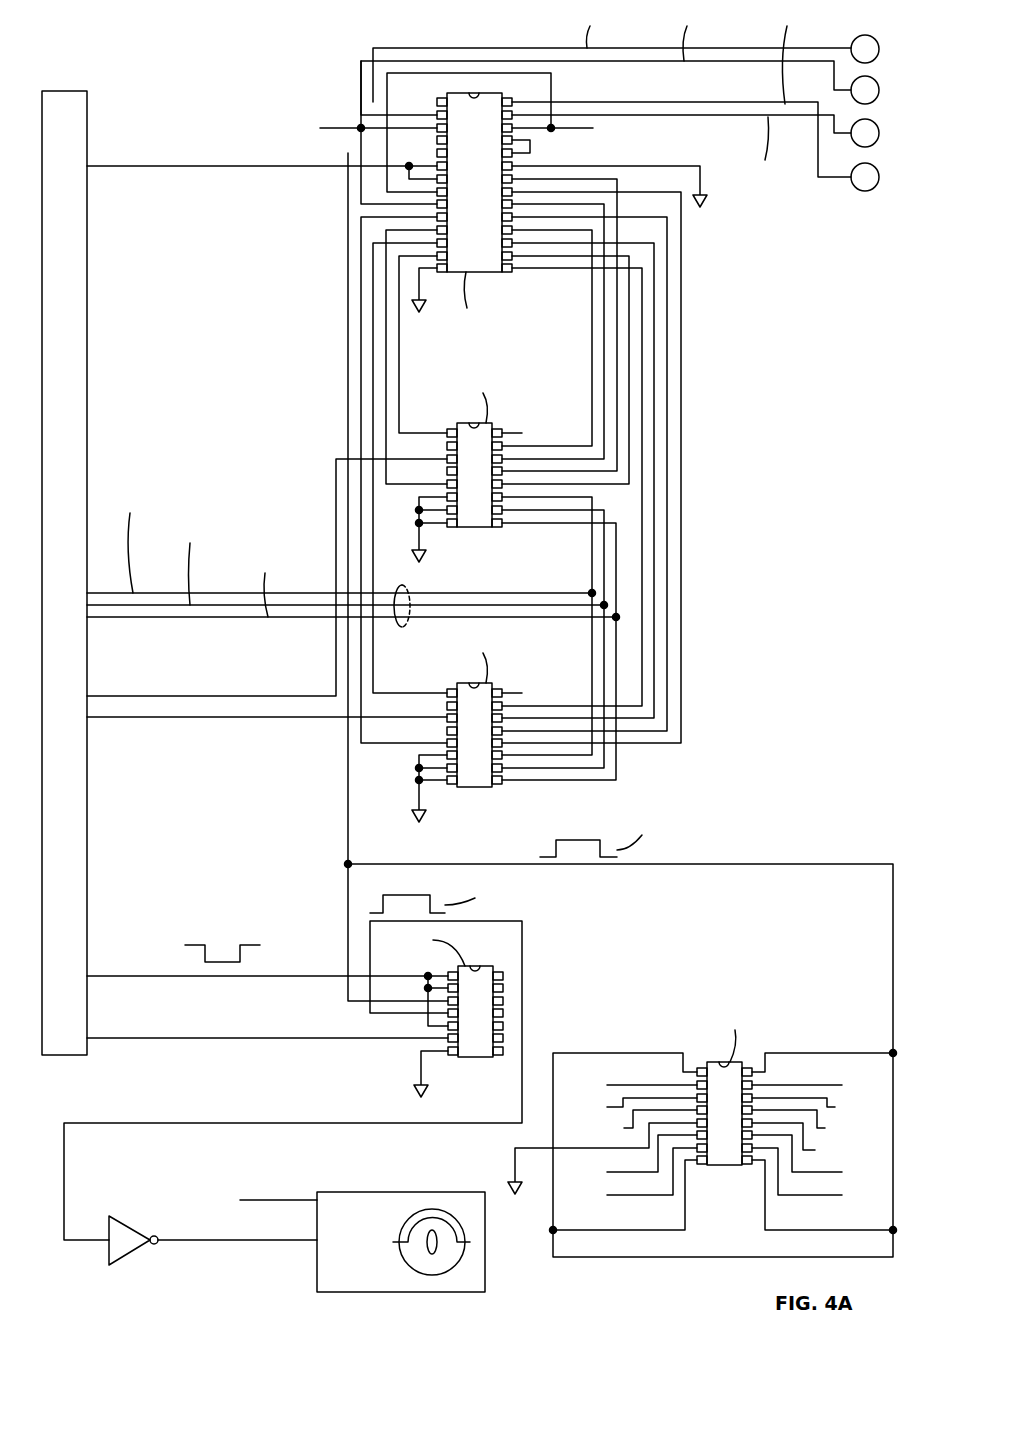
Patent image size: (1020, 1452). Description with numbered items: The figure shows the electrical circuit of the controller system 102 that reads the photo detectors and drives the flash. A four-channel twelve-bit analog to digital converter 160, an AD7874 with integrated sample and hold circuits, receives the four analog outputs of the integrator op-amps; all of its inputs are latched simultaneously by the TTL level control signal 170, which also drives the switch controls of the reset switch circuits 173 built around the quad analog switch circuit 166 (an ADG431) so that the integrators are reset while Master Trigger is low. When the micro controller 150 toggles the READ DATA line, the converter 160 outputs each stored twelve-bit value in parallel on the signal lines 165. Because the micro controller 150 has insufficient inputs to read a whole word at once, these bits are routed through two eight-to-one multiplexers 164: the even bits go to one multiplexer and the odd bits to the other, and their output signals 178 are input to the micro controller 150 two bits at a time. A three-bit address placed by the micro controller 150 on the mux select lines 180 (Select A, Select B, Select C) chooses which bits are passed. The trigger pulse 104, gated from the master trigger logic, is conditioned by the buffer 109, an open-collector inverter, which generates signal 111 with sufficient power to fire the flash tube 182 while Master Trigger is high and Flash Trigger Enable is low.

The controller system 102 is at (245, 48).
The trigger pulse 104 is at (522, 962).
The buffer 109 is at (130, 1220).
The flash trigger signal 111 is at (283, 1243).
The micro controller 150 is at (87, 310).
The analog to digital converter 160 is at (488, 272).
The multiplexer 164 is at (470, 528).
The signal lines 165 is at (592, 316).
The analog switch circuit 166 is at (473, 1058).
The control line signal 170 is at (348, 858).
The reset switch circuit 173 is at (722, 1165).
The output signal 178 is at (313, 786).
The mux select lines 180 is at (403, 627).
The flash tube 182 is at (395, 1192).